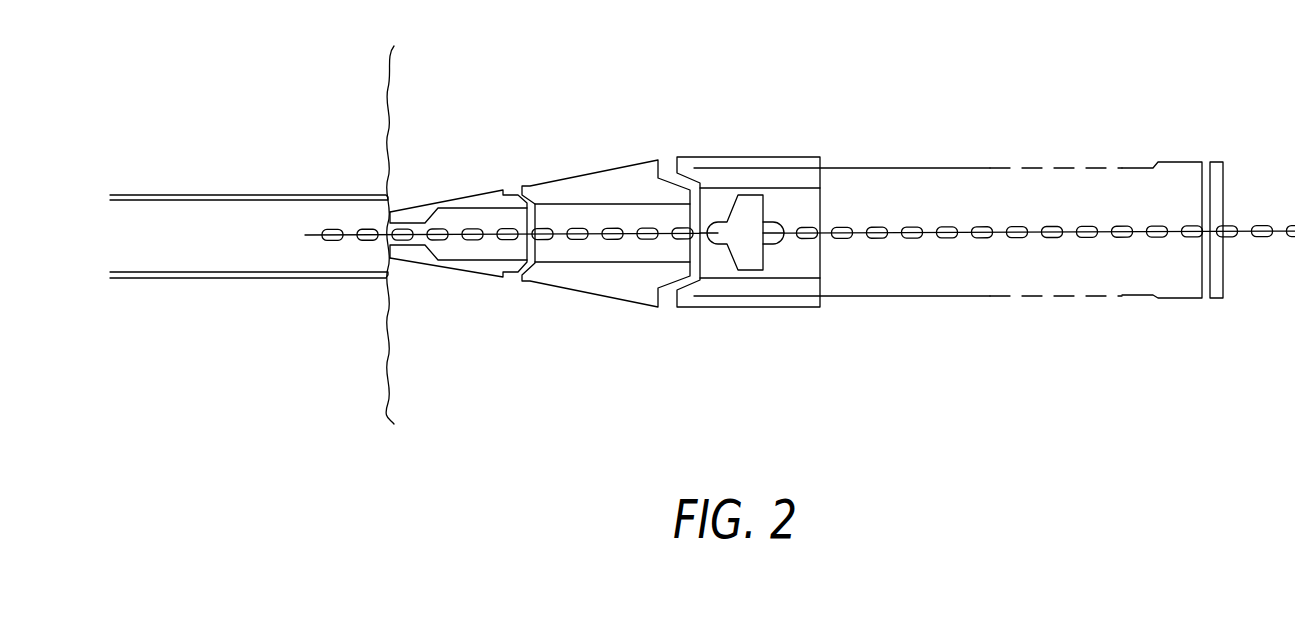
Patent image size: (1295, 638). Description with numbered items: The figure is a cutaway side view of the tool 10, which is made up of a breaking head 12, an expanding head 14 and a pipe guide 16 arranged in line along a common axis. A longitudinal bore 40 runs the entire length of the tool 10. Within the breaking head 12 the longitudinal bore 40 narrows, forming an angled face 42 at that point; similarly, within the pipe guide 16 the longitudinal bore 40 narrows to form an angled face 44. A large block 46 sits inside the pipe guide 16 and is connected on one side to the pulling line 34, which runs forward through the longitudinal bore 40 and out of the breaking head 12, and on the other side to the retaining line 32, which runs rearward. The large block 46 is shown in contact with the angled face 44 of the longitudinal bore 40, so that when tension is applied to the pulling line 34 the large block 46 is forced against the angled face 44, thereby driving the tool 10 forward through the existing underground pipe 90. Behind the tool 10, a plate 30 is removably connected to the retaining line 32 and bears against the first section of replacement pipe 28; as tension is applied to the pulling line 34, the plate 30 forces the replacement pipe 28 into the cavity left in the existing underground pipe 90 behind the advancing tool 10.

The tool 10 is at (744, 70).
The breaking head 12 is at (474, 190).
The expanding head 14 is at (598, 190).
The pipe guide 16 is at (793, 177).
The replacement pipe 28 is at (893, 298).
The plate 30 is at (1215, 160).
The retaining line 32 is at (963, 233).
The pulling line 34 is at (366, 240).
The longitudinal bore 40 is at (636, 253).
The angled face 42 is at (429, 248).
The angled face 44 is at (728, 266).
The large block 46 is at (758, 271).
The existing underground pipe 90 is at (232, 195).